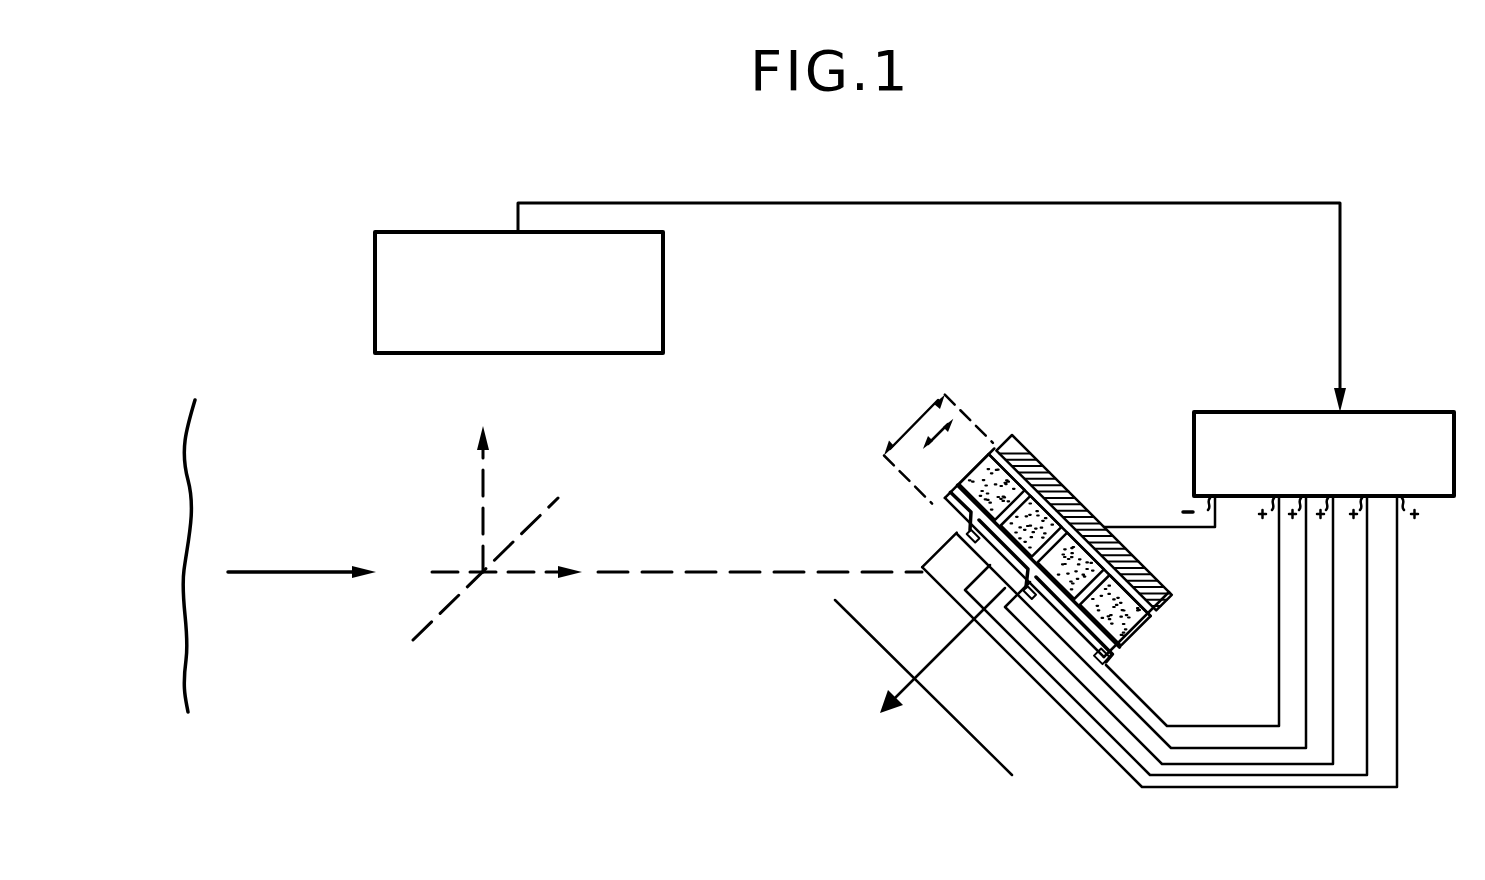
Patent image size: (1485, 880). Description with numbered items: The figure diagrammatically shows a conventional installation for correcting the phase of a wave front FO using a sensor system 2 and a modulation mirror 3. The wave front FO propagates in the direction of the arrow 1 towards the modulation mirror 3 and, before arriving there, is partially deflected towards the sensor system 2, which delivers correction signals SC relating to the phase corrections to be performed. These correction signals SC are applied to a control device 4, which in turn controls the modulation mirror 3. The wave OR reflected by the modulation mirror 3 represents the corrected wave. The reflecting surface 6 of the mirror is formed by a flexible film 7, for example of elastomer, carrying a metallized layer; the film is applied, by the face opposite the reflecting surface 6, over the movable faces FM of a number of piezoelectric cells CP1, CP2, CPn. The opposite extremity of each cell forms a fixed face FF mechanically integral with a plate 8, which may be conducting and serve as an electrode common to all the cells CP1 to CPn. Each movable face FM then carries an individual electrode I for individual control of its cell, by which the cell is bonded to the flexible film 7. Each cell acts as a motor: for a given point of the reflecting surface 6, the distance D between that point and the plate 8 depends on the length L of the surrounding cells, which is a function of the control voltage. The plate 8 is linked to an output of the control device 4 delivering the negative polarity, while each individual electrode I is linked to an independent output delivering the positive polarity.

The arrow 1 is at (280, 573).
The sensor system 2 is at (373, 295).
The modulation mirror 3 is at (898, 402).
The control device 4 is at (1222, 412).
The reflecting surface 6 is at (936, 535).
The flexible film 7 is at (937, 503).
The plate 8 is at (1094, 497).
The correction signals SC is at (683, 203).
The wave front FO is at (188, 678).
The reflected wave OR is at (982, 748).
The distance D is at (902, 433).
The length L is at (940, 438).
The fixed face FF is at (989, 441).
The movable face FM is at (945, 493).
The piezoelectric cell CP1 is at (1024, 446).
The piezoelectric cell CP2 is at (1050, 476).
The piezoelectric cell CPn is at (1153, 572).
The individual electrode I is at (968, 534).